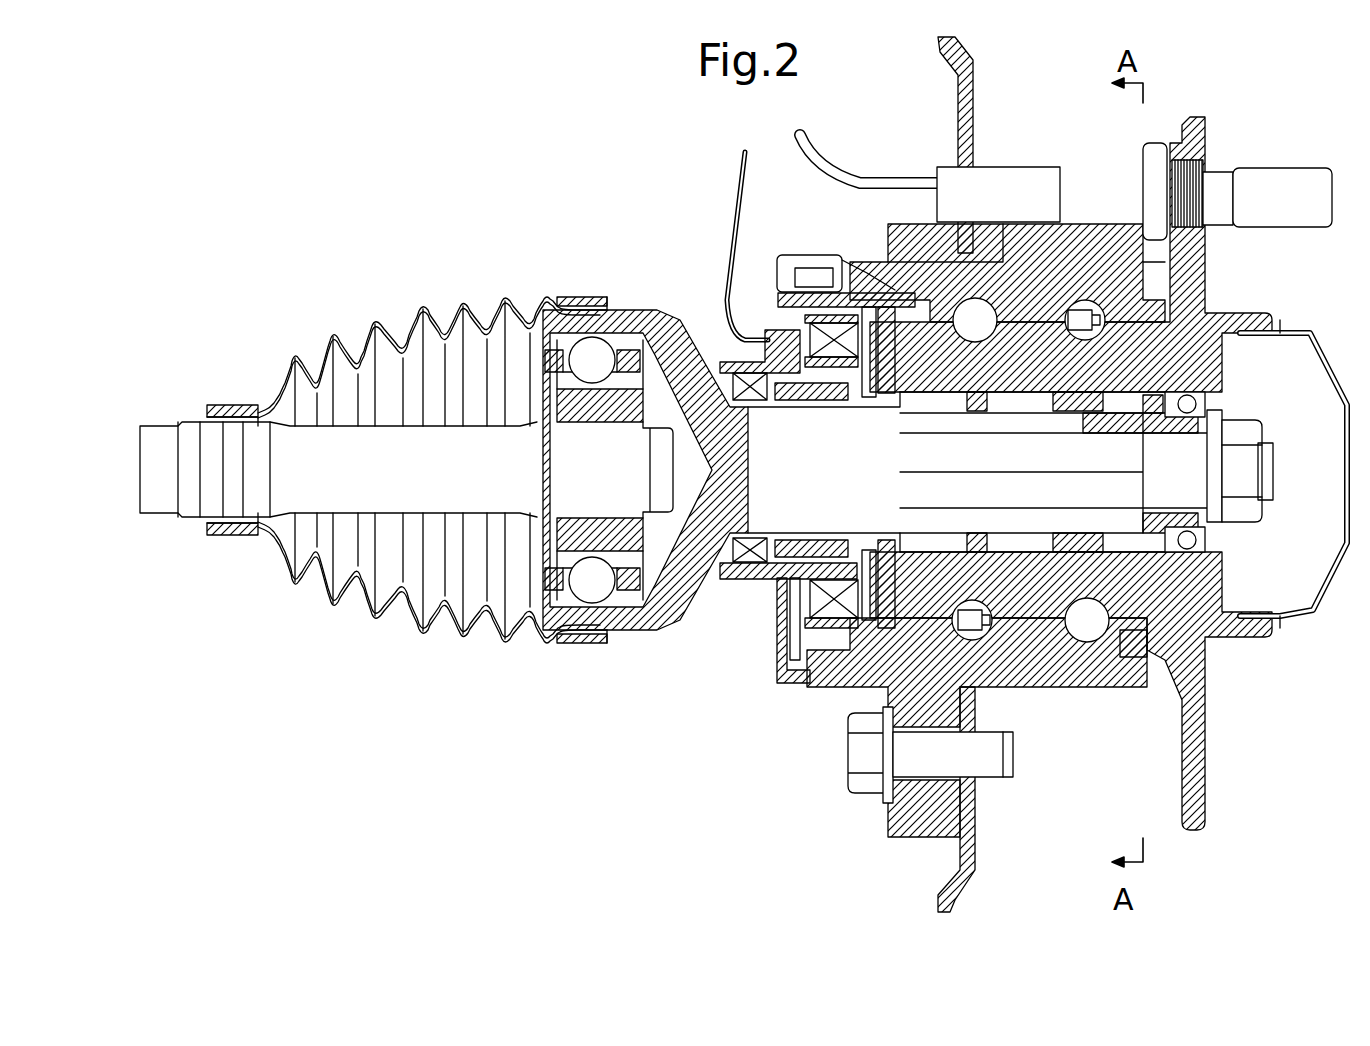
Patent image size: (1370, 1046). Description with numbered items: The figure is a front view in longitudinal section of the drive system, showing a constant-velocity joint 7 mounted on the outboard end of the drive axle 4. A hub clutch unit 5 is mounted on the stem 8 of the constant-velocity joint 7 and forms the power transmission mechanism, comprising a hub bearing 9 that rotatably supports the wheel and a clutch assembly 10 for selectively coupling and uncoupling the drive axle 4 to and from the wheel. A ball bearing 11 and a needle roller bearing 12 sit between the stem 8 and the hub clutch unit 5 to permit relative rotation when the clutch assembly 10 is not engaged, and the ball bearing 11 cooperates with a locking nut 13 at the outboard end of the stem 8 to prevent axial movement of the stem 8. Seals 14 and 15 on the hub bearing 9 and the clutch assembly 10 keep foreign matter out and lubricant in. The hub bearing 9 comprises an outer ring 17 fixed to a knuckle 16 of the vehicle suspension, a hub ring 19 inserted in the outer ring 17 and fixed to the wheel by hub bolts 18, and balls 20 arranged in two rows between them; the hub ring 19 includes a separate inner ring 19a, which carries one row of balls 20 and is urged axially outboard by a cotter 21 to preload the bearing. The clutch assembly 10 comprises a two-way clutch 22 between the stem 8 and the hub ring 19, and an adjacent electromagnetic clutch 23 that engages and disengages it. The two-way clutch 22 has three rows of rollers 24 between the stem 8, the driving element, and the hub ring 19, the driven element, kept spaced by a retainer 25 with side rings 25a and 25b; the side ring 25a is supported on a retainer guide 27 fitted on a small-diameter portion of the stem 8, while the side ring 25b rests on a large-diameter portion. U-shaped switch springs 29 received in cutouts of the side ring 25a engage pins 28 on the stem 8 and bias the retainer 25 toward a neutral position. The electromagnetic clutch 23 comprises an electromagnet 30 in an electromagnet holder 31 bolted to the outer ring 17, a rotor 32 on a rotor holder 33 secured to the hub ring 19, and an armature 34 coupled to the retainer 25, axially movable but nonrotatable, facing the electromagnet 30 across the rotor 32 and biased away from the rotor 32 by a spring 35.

The drive axle 4 is at (172, 420).
The hub clutch unit 5 is at (1195, 108).
The constant-velocity joint 7 is at (580, 304).
The stem 8 is at (1205, 645).
The hub bearing 9 is at (1079, 693).
The clutch assembly 10 is at (840, 783).
The ball bearing 11 is at (1207, 543).
The needle roller bearing 12 is at (807, 540).
The locking nut 13 is at (1247, 433).
The seal 14 is at (735, 372).
The seal 15 is at (1127, 665).
The knuckle 16 is at (925, 815).
The outer ring 17 is at (1117, 278).
The hub bolts 18 is at (1282, 185).
The hub ring 19 is at (1225, 337).
The inner ring 19a is at (935, 580).
The balls 20 is at (1078, 305).
The cotter 21 is at (907, 587).
The two-way clutch 22 is at (887, 670).
The electromagnetic clutch 23 is at (805, 687).
The rollers 24 is at (1033, 640).
The retainer 25 is at (1067, 427).
The side ring 25a is at (1152, 398).
The side ring 25b is at (887, 407).
The retainer guide 27 is at (1215, 473).
The pins 28 is at (1113, 433).
The switch springs 29 is at (1120, 400).
The electromagnet 30 is at (790, 335).
The electromagnet holder 31 is at (783, 255).
The rotor 32 is at (828, 263).
The rotor holder 33 is at (880, 270).
The armature 34 is at (912, 372).
The spring 35 is at (853, 407).